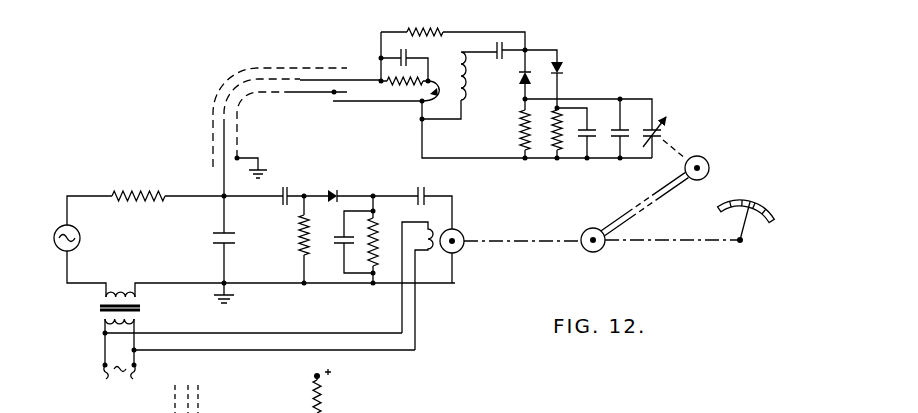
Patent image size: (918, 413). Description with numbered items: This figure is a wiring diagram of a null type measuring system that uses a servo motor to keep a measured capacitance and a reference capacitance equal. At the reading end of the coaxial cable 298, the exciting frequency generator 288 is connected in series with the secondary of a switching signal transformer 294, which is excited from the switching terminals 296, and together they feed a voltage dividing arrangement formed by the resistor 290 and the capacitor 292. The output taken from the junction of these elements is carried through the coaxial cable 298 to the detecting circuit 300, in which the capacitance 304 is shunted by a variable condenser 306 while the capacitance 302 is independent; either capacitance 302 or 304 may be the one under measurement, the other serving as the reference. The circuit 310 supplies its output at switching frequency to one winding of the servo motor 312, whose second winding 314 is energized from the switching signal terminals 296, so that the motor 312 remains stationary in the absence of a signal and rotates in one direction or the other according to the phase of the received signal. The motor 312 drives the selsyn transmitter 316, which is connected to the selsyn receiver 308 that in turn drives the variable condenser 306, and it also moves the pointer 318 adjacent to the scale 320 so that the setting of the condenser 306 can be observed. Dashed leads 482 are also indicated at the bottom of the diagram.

The exciting frequency generator 288 is at (80, 242).
The resistor 290 is at (143, 191).
The capacitor 292 is at (218, 246).
The switching signal transformer 294 is at (100, 305).
The switching terminals 296 is at (126, 360).
The coaxial cable 298 is at (255, 68).
The detecting circuit 300 is at (567, 61).
The capacitance 302 is at (589, 128).
The capacitance 304 is at (624, 128).
The variable condenser 306 is at (667, 125).
The selsyn receiver 308 is at (725, 165).
The circuit 310 is at (323, 190).
The servo motor 312 is at (463, 232).
The second winding 314 is at (436, 250).
The selsyn transmitter 316 is at (595, 250).
The pointer 318 is at (742, 241).
The scale 320 is at (752, 202).
The cable leads 482 is at (202, 408).